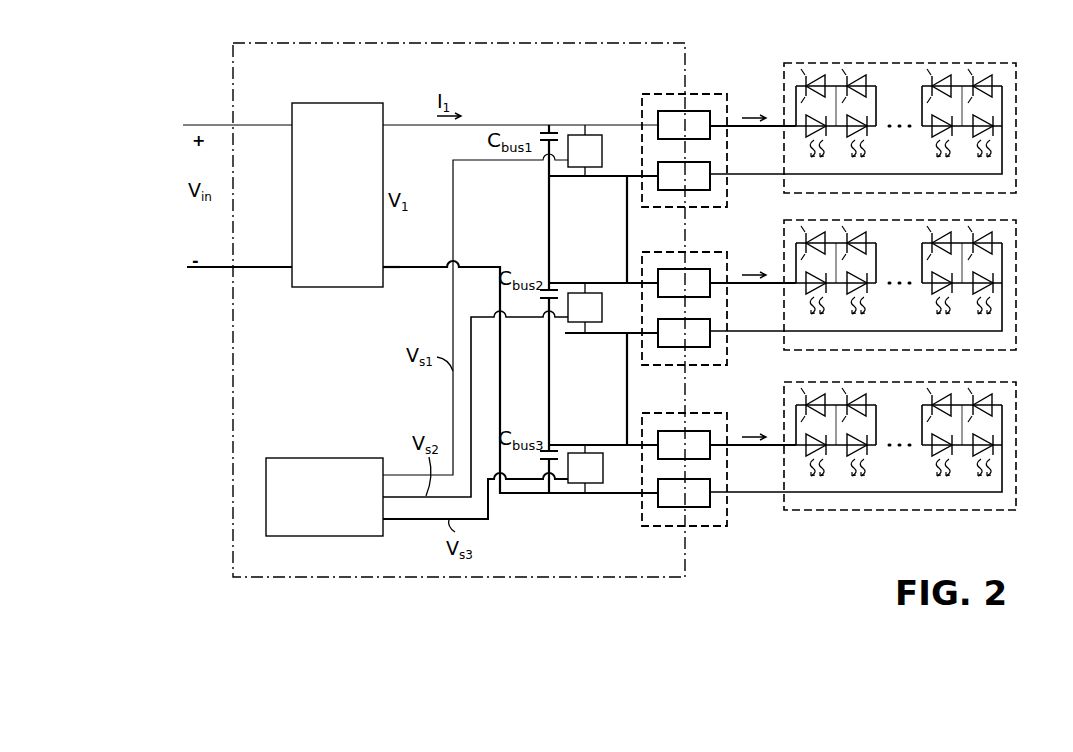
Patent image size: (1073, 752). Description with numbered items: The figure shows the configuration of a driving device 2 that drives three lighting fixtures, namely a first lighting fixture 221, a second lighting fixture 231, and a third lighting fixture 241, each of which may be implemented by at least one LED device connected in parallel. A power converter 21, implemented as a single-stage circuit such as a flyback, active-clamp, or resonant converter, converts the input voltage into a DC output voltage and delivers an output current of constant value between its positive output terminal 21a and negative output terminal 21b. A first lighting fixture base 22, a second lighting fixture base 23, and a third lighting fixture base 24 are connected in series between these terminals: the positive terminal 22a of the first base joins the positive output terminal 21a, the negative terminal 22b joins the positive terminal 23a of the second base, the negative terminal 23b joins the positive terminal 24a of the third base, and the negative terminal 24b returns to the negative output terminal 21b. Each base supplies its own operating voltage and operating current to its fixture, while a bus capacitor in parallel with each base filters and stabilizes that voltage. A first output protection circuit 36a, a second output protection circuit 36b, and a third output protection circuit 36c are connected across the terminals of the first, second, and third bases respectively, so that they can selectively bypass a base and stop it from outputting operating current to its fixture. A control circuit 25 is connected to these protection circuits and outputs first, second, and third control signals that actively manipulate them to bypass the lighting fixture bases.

The driving device 2 is at (300, 43).
The power converter 21 is at (356, 103).
The positive output terminal 21a is at (384, 125).
The negative output terminal 21b is at (383, 268).
The first lighting fixture base 22 is at (672, 94).
The positive terminal 22a is at (684, 125).
The negative terminal 22b is at (684, 176).
The second lighting fixture base 23 is at (672, 252).
The positive terminal 23a is at (684, 283).
The negative terminal 23b is at (684, 333).
The third lighting fixture base 24 is at (672, 413).
The positive terminal 24a is at (684, 445).
The negative terminal 24b is at (684, 493).
The control circuit 25 is at (323, 458).
The first output protection circuit 36a is at (585, 150).
The second output protection circuit 36b is at (585, 308).
The third output protection circuit 36c is at (585, 469).
The first lighting fixture 221 is at (1017, 121).
The second lighting fixture 231 is at (1017, 278).
The third lighting fixture 241 is at (1017, 440).